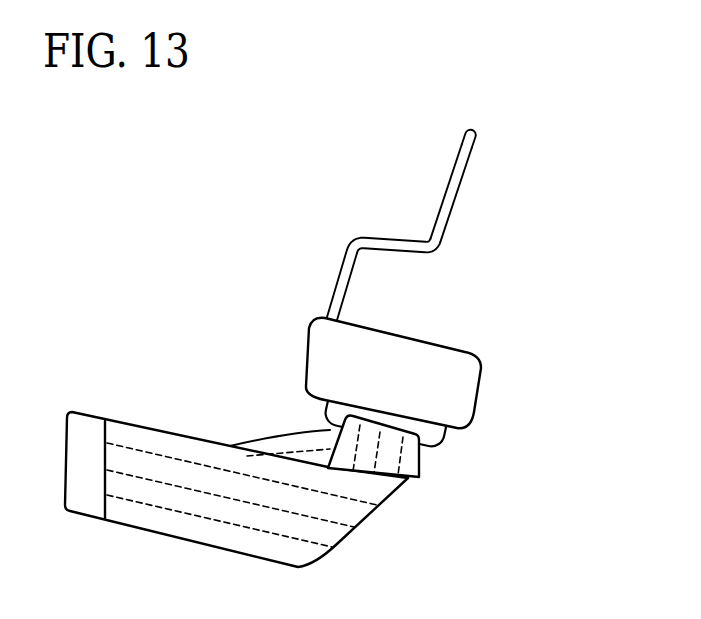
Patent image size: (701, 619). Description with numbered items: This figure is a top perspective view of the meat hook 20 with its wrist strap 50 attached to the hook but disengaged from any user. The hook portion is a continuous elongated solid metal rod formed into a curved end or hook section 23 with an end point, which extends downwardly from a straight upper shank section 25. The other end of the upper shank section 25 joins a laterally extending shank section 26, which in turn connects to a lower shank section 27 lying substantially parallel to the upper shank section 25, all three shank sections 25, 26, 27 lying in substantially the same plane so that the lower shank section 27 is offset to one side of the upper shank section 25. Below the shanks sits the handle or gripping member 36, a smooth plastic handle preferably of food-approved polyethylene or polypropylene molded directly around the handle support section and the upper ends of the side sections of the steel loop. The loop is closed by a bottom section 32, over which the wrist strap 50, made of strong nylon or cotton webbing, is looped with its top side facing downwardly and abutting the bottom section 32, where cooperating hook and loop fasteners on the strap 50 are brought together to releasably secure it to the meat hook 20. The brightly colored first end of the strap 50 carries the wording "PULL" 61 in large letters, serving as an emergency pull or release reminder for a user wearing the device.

The meat hook 20 is at (343, 319).
The curved end or hook section 23 is at (472, 130).
The upper shank section 25 is at (461, 177).
The laterally extending shank section 26 is at (397, 246).
The lower shank section 27 is at (341, 275).
The handle or gripping member 36 is at (328, 361).
The bottom section 32 is at (431, 447).
The wrist strap 50 is at (220, 542).
The wording "PULL" 61 is at (78, 424).